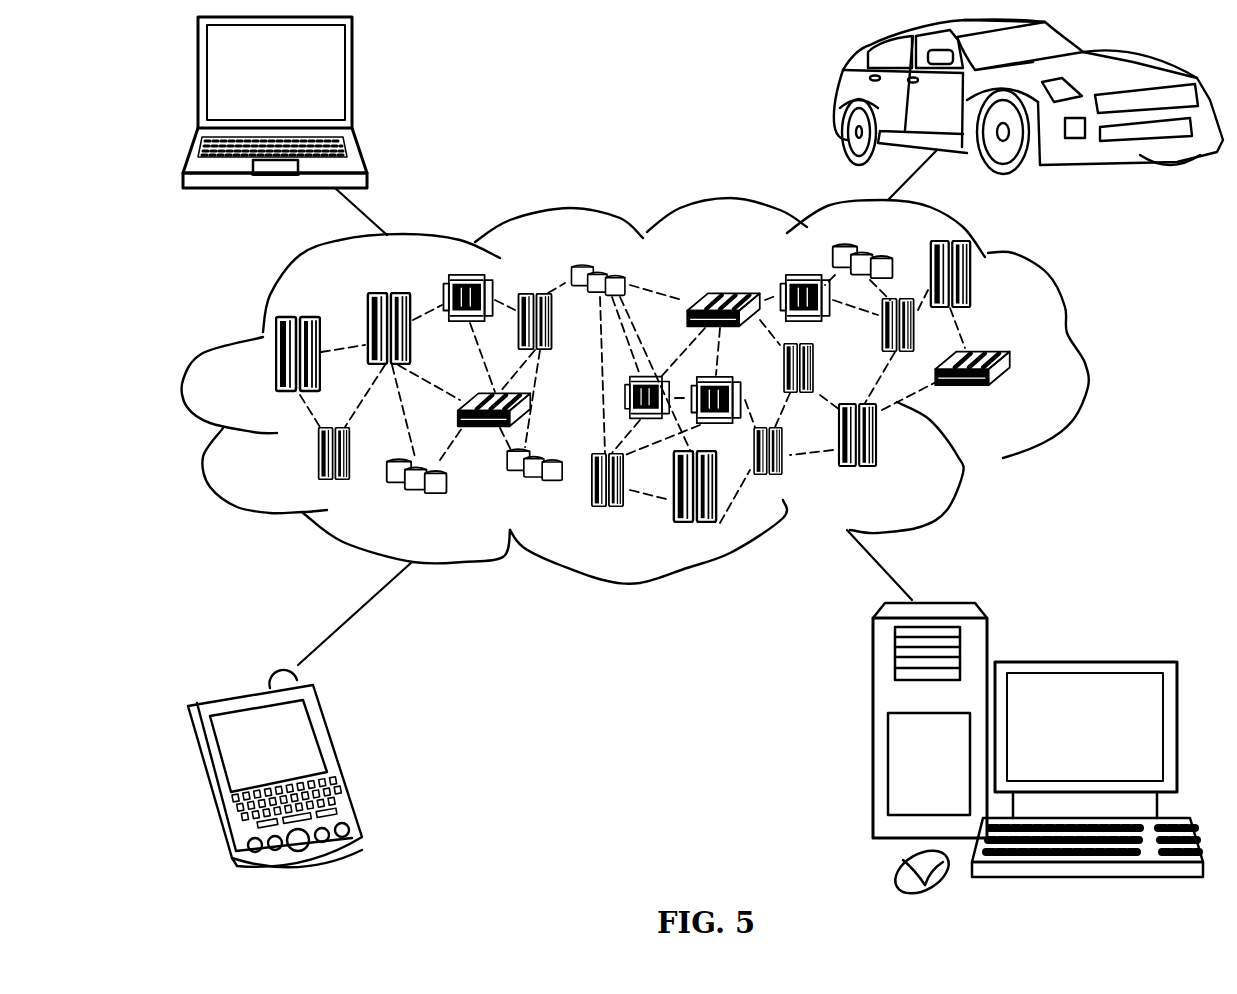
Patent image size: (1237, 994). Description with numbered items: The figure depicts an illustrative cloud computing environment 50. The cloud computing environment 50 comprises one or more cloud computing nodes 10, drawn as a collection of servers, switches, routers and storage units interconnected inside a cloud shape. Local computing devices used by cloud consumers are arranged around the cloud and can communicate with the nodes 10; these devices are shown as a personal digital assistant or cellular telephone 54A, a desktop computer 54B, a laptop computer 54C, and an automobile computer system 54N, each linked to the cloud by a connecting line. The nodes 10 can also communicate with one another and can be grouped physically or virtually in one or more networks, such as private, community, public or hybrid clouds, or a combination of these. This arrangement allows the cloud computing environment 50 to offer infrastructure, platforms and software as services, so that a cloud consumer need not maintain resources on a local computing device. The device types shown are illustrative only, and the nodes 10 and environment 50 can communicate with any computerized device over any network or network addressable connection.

The cloud computing node 10 is at (1022, 396).
The cloud computing environment 50 is at (1085, 363).
The personal digital assistant or cellular telephone 54A is at (338, 758).
The desktop computer 54B is at (1083, 662).
The laptop computer 54C is at (350, 81).
The automobile computer system 54N is at (837, 97).